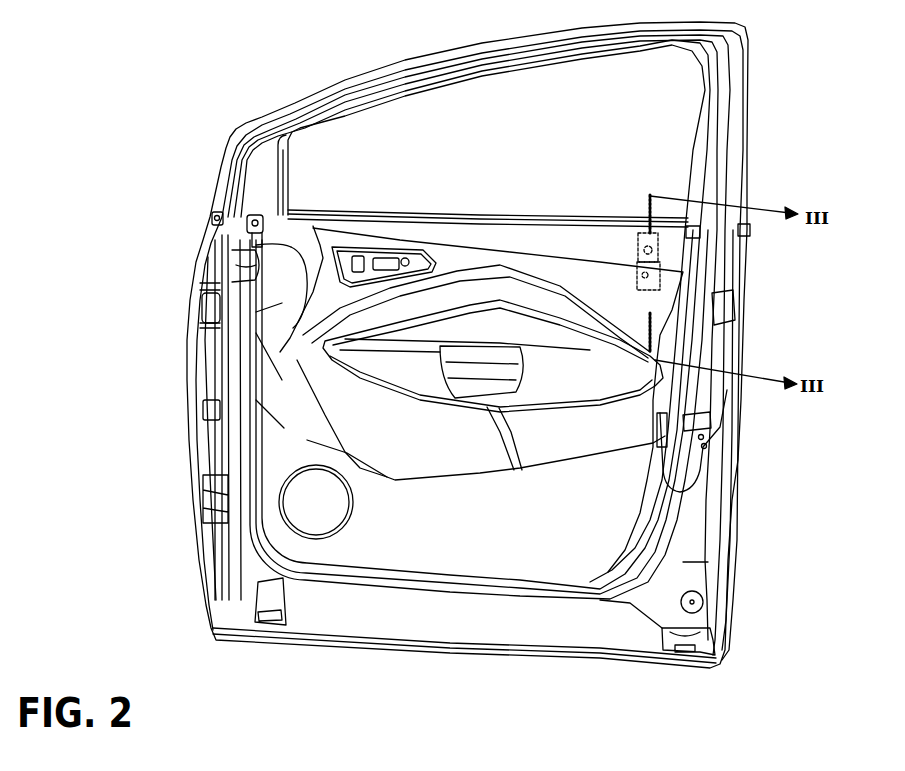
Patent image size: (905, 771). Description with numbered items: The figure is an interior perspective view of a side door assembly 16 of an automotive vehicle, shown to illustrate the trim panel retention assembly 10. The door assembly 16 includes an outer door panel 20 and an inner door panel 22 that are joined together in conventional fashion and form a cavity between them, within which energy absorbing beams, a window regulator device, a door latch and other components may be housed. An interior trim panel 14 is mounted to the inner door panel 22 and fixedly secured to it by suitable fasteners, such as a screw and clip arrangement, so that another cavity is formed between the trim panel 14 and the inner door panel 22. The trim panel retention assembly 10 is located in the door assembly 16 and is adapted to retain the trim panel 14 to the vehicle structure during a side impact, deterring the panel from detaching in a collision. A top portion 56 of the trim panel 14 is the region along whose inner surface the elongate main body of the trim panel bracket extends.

The trim panel retention assembly 10 is at (633, 245).
The interior trim panel 14 is at (388, 543).
The door assembly 16 is at (752, 113).
The outer door panel 20 is at (455, 655).
The inner door panel 22 is at (700, 535).
The top portion 56 is at (527, 236).